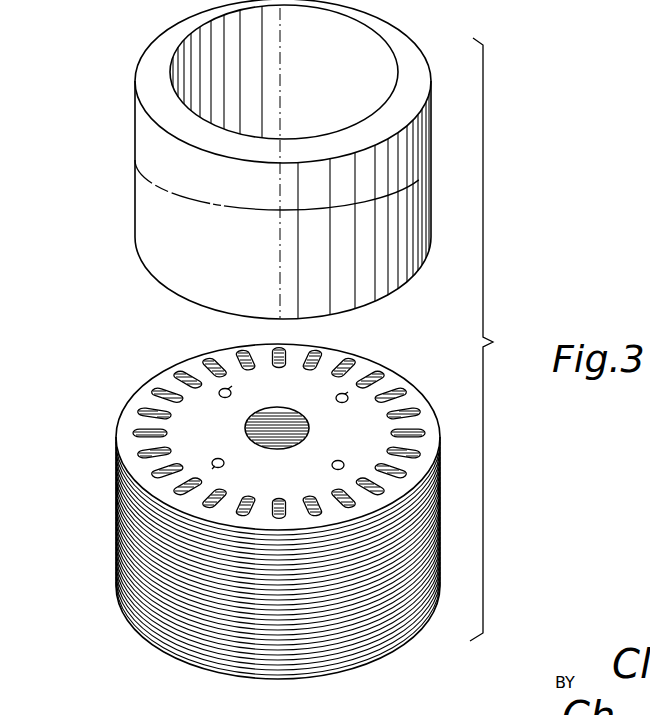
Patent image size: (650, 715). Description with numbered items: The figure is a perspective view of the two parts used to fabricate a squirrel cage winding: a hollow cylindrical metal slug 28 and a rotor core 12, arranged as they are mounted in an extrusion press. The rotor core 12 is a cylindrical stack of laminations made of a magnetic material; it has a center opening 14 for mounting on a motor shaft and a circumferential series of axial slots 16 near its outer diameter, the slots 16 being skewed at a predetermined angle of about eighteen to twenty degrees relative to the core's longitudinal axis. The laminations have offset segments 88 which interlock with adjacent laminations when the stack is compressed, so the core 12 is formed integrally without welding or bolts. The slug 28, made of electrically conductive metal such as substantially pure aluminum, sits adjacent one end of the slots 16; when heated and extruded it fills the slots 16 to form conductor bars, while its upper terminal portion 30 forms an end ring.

The rotor core 12 is at (116, 528).
The center opening 14 is at (306, 441).
The axial slots 16 is at (186, 376).
The metal slug 28 is at (121, 195).
The upper terminal portion 30 is at (157, 163).
The offset segments 88 is at (217, 459).